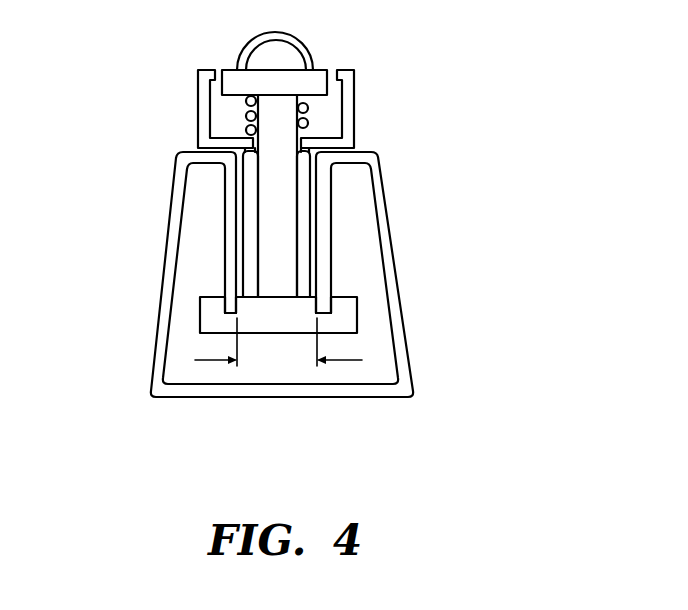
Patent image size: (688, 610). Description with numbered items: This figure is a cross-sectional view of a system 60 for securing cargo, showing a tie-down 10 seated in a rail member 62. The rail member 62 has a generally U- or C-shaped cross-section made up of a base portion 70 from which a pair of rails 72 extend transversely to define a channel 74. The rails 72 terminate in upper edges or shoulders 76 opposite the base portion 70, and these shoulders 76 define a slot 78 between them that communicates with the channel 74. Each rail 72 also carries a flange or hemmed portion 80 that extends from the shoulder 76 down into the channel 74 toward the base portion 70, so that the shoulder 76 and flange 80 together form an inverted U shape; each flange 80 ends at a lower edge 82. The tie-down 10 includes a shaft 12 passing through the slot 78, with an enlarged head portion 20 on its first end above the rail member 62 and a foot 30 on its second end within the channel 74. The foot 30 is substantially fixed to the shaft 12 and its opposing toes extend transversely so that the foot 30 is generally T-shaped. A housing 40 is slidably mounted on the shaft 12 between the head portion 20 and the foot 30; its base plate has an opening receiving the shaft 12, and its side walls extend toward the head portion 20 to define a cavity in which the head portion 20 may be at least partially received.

The tie-down 10 is at (372, 71).
The head portion 20 is at (317, 63).
The housing 40 is at (198, 110).
The shaft 12 is at (258, 195).
The slot 78 is at (318, 196).
The system for securing cargo 60 is at (418, 147).
The rail member 62 is at (412, 280).
The rails 72 is at (157, 358).
The shoulders 76 is at (183, 152).
The flange 80 is at (230, 210).
The base portion 70 is at (280, 394).
The foot 30 is at (200, 300).
The lower edge 82 is at (232, 314).
The channel 74 is at (296, 369).